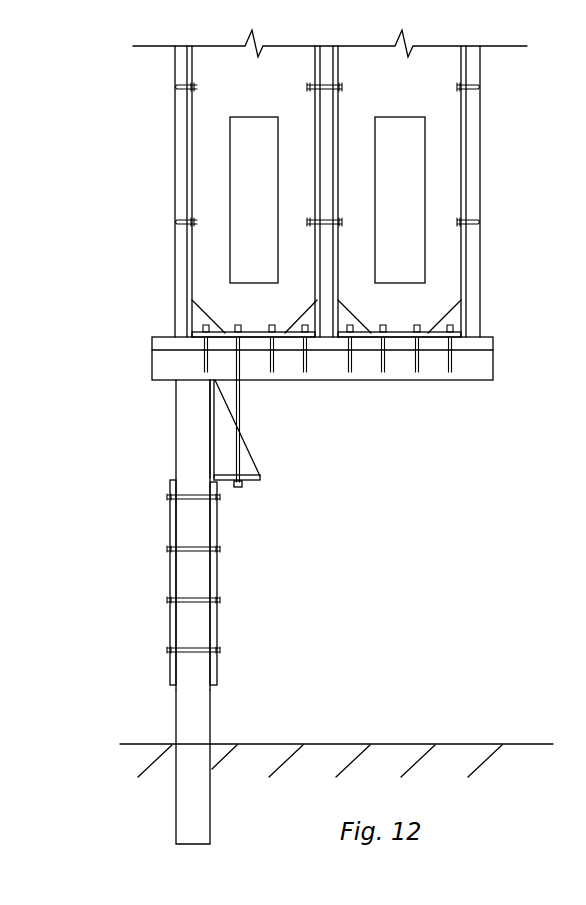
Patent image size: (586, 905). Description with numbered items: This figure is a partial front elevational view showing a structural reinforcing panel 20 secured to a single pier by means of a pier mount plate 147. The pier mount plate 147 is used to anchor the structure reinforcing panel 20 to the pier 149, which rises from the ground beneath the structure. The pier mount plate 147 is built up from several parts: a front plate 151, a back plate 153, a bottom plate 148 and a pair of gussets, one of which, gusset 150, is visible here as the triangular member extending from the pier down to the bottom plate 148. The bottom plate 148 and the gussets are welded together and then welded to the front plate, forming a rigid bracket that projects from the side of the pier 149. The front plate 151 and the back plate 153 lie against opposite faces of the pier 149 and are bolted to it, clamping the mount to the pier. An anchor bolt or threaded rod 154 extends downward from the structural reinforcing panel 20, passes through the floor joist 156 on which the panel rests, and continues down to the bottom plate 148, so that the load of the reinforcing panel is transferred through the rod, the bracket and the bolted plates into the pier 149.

The structural reinforcing panel 20 is at (202, 262).
The pier mount plate 147 is at (309, 438).
The bottom plate 148 is at (257, 483).
The pier 149 is at (203, 720).
The gusset 150 is at (252, 465).
The front plate 151 is at (212, 578).
The back plate 153 is at (175, 578).
The anchor bolt or threaded rod 154 is at (240, 395).
The floor joist 156 is at (485, 360).